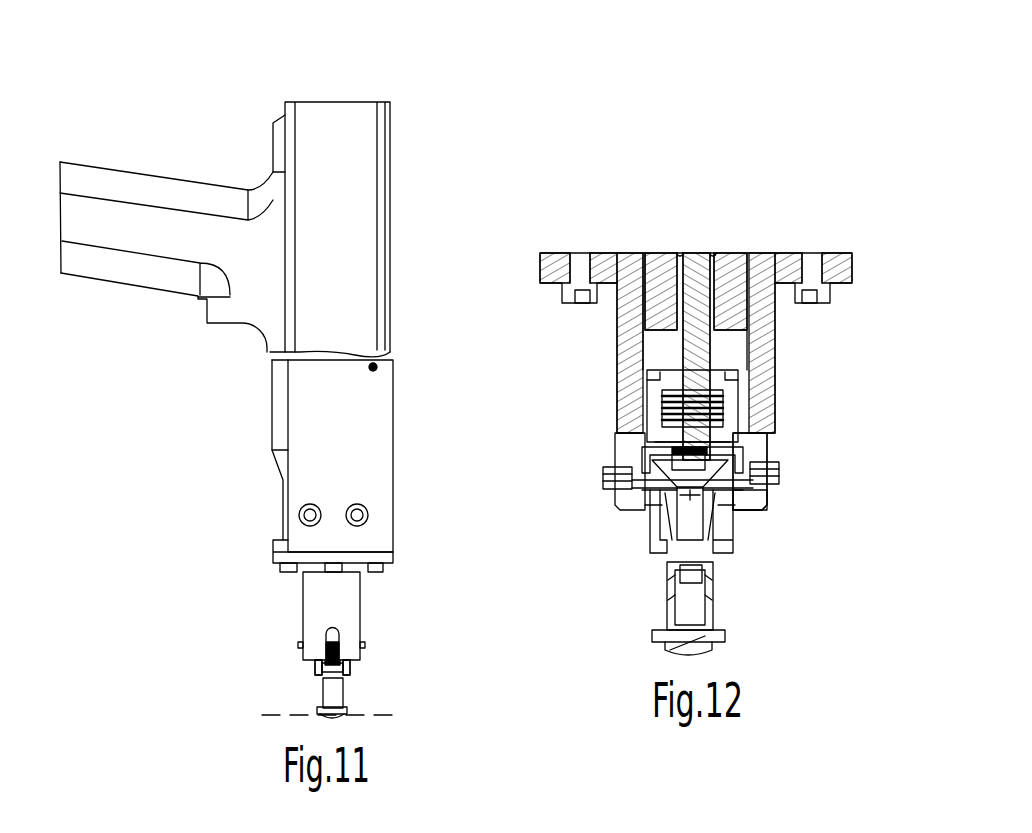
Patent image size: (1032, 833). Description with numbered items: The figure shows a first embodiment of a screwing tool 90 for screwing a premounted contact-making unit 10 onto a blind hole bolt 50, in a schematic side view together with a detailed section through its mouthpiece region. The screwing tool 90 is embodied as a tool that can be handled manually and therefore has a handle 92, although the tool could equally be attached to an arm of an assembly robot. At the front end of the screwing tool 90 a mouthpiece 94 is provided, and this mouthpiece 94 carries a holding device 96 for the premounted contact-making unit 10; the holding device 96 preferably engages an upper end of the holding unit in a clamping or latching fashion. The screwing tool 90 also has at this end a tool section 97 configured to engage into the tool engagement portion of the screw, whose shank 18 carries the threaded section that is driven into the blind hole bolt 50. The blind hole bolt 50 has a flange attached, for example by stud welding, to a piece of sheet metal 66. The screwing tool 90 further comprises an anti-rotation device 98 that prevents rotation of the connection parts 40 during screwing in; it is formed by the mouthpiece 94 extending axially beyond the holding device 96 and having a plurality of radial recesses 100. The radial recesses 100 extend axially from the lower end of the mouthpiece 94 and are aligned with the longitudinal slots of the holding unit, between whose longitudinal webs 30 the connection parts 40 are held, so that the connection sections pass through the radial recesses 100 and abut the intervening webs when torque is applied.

In FIG. 11, the screwing tool 90 is at (415, 127).
In FIG. 12, the screwing tool 90 is at (778, 217).
In FIG. 11, the handle 92 is at (163, 227).
In FIG. 11, the mouthpiece 94 is at (318, 600).
In FIG. 12, the mouthpiece 94 is at (762, 382).
In FIG. 11, the blind hole bolt 50 is at (332, 693).
In FIG. 12, the blind hole bolt 50 is at (716, 608).
In FIG. 11, the contact-making unit 10 is at (355, 673).
In FIG. 11, the connection parts 40 is at (332, 667).
In FIG. 12, the connection parts 40 is at (606, 468).
In FIG. 11, the piece of sheet metal 66 is at (377, 715).
In FIG. 12, the tool section 97 is at (693, 462).
In FIG. 12, the holding device 96 is at (746, 458).
In FIG. 12, the anti-rotation device 98 is at (766, 493).
In FIG. 12, the radial recesses 100 is at (767, 508).
In FIG. 12, the shank 18 is at (650, 517).
In FIG. 12, the longitudinal webs 30 is at (650, 530).